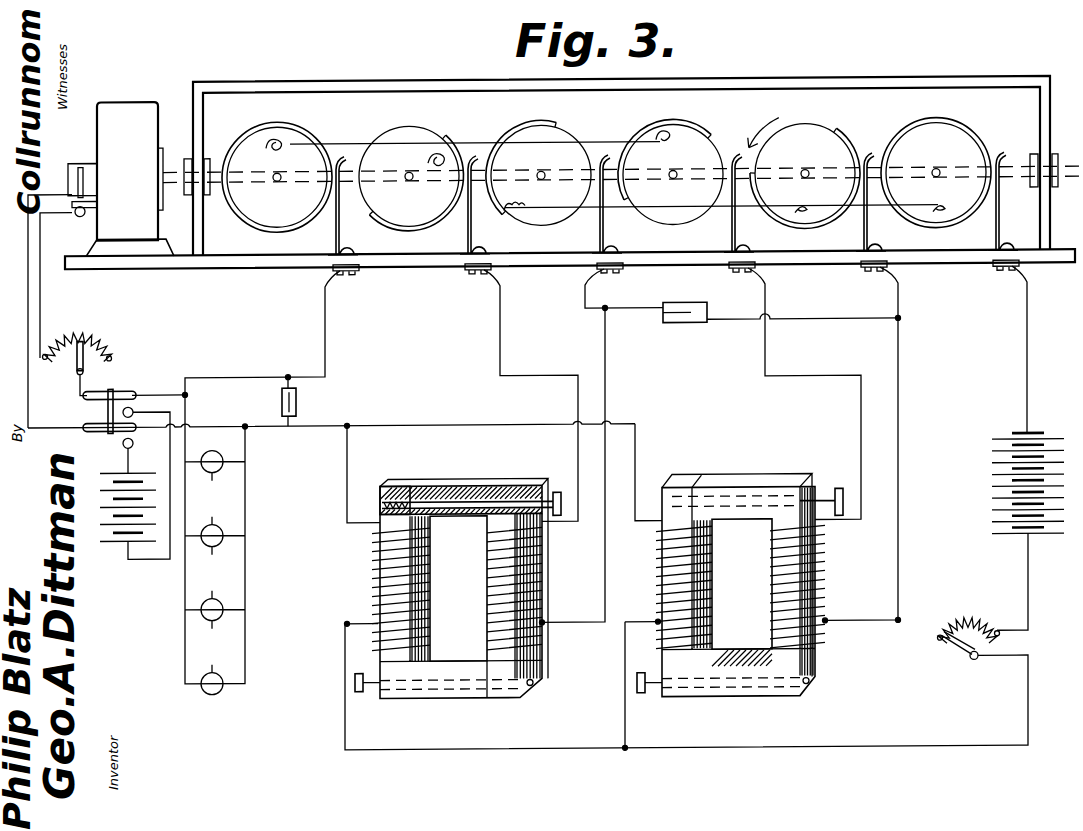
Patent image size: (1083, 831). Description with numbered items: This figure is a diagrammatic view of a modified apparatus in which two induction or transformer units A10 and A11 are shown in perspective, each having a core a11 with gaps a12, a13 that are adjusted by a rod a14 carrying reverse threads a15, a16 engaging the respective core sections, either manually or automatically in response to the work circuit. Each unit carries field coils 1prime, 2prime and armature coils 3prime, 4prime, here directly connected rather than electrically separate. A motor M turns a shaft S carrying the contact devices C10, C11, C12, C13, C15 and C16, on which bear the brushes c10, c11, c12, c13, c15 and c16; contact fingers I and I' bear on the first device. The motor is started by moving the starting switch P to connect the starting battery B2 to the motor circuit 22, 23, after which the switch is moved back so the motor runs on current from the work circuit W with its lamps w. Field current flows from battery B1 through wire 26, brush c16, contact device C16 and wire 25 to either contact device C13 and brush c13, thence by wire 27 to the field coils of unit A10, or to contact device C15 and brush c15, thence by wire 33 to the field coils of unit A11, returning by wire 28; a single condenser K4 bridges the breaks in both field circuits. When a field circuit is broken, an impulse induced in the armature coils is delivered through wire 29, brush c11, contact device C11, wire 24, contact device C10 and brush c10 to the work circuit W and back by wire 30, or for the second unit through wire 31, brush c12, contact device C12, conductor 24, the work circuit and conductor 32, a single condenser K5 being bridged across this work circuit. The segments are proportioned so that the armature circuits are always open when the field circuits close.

The motor M is at (121, 107).
The shaft S is at (180, 164).
The contact device C10 is at (277, 163).
The contact device C11 is at (411, 162).
The contact device C12 is at (670, 156).
The contact device C13 is at (538, 157).
The contact device C15 is at (804, 158).
The contact device C16 is at (936, 157).
The wire 24 is at (343, 139).
The wire 25 is at (728, 236).
The contact finger I is at (280, 230).
The contact finger I' is at (361, 243).
The brush c10 is at (310, 248).
The brush c11 is at (463, 249).
The brush c12 is at (730, 250).
The brush c13 is at (597, 240).
The brush c15 is at (862, 251).
The brush c16 is at (995, 251).
The motor circuit wire 22 is at (28, 303).
The motor circuit wire 23 is at (40, 318).
The starting switch P is at (107, 383).
The starting battery B2 is at (115, 493).
The conductor 32 is at (331, 415).
The condenser K5 is at (315, 400).
The work circuit W is at (237, 555).
The lamp w is at (212, 573).
The wire 29 is at (519, 380).
The wire 30 is at (345, 477).
The wire 27 is at (607, 393).
The condenser K4 is at (782, 328).
The wire 31 is at (861, 421).
The wire 33 is at (898, 434).
The wire 26 is at (1022, 344).
The battery B1 is at (1007, 532).
The wire 28 is at (832, 748).
The induction unit A10 is at (464, 588).
The induction unit A11 is at (740, 584).
The core gap a13 is at (418, 484).
The reverse thread a15 is at (396, 486).
The reverse thread a16 is at (450, 496).
The rod a14 is at (542, 498).
The core gap a12 is at (490, 690).
The core a11 is at (505, 663).
The armature coil 3prime is at (370, 572).
The armature coil 4prime is at (533, 572).
The field coil 1prime is at (378, 645).
The field coil 2prime is at (427, 650).